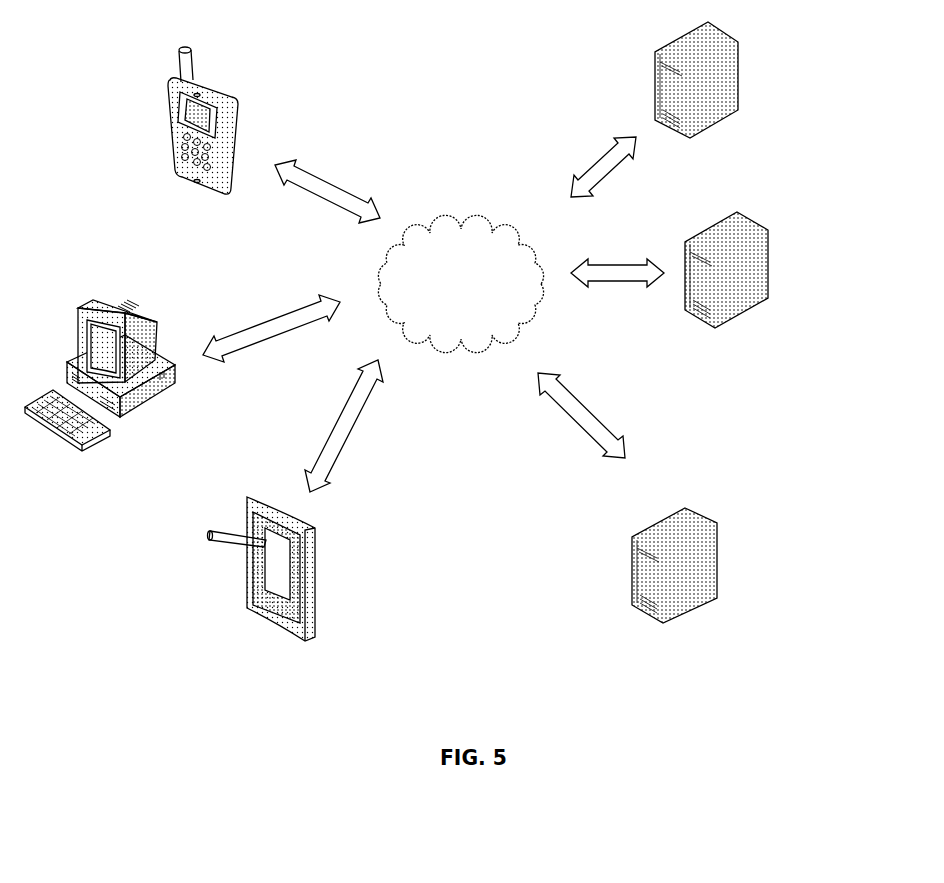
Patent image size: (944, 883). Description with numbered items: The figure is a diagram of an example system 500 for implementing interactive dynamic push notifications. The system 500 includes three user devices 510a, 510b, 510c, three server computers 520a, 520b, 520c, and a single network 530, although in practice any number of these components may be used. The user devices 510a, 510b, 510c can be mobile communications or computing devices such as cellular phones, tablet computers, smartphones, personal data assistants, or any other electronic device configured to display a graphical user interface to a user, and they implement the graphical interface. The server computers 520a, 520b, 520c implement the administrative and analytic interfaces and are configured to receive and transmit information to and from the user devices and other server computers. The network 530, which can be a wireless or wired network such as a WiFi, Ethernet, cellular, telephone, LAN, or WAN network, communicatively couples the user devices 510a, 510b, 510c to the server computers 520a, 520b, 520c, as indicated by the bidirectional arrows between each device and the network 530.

The system 500 is at (483, 61).
The user device 510a is at (250, 120).
The user device 510b is at (113, 318).
The user device 510c is at (283, 585).
The server computer 520a is at (727, 87).
The server computer 520b is at (757, 277).
The server computer 520c is at (707, 572).
The network 530 is at (477, 295).